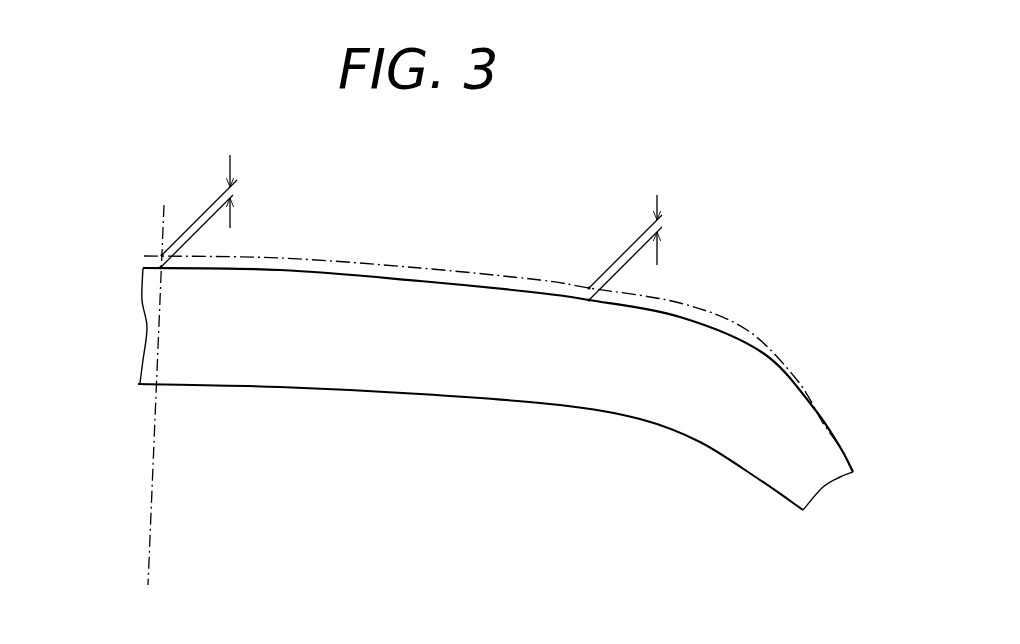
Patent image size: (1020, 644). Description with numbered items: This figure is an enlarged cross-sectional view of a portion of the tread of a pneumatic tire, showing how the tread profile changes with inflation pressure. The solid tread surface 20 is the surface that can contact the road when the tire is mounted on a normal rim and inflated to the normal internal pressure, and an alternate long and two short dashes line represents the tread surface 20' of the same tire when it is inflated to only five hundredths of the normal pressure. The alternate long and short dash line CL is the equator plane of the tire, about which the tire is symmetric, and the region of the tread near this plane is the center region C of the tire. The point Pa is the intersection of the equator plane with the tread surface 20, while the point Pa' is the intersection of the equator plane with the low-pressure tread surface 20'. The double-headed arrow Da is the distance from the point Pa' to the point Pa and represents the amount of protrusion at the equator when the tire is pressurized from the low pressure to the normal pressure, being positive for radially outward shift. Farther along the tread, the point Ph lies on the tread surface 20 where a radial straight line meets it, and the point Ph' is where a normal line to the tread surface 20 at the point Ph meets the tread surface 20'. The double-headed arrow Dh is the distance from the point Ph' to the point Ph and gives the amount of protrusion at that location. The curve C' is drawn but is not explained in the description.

The tread surface 20 is at (495, 346).
The tread surface 20' is at (498, 318).
The center region C is at (498, 332).
The blade surface curve before correction C' is at (498, 318).
The point Pa is at (109, 256).
The point Pa' is at (115, 232).
The point Ph is at (558, 270).
The point Ph' is at (587, 240).
The amount of protrusion Da is at (216, 211).
The amount of protrusion Dh is at (645, 247).
The equator plane CL is at (150, 503).